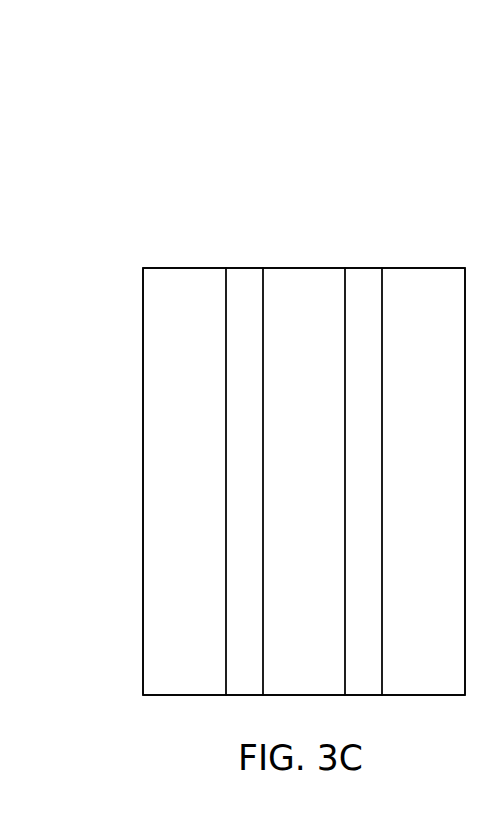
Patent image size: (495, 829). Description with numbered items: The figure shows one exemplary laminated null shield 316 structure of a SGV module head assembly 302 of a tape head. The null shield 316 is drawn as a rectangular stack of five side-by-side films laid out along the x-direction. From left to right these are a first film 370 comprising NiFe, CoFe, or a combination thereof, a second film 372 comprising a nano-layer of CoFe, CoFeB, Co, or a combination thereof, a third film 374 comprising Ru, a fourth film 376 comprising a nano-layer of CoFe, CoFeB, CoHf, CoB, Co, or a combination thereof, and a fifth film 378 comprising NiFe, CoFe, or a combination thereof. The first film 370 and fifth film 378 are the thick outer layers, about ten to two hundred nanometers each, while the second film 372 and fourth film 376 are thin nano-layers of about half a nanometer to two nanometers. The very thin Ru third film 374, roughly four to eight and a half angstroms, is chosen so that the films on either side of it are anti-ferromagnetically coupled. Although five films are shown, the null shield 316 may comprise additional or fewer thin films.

The SGV module head assembly 302 is at (158, 77).
The null shield 316 is at (248, 164).
The first film 370 is at (181, 277).
The second film 372 is at (240, 275).
The third film 374 is at (302, 277).
The fourth film 376 is at (365, 275).
The fifth film 378 is at (425, 277).